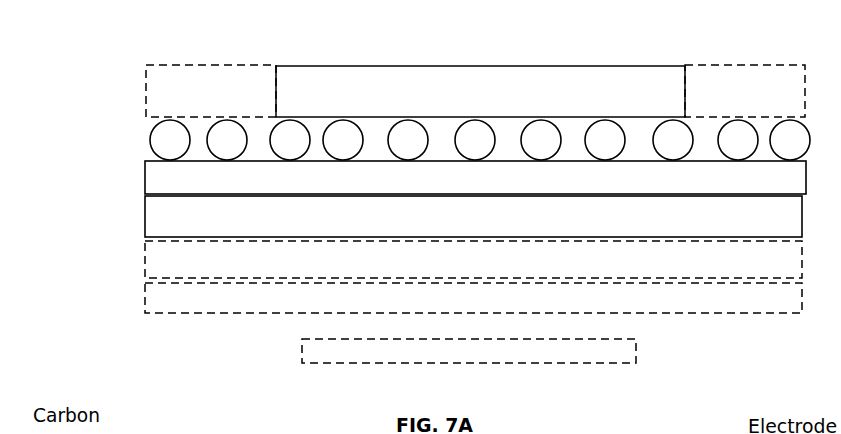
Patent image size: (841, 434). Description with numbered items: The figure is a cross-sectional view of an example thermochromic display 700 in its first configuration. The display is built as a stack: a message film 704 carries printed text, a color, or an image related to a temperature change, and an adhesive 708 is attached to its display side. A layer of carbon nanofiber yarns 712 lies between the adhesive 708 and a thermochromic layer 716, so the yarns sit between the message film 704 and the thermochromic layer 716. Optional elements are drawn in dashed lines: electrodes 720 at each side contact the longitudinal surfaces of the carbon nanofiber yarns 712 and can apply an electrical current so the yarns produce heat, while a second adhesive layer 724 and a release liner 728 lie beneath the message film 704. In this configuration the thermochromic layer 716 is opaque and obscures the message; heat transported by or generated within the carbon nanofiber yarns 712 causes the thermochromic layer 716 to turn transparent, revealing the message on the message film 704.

The thermochromic display 700 is at (415, 202).
The message film 704 is at (553, 225).
The adhesive 708 is at (535, 189).
The carbon nanofiber yarns 712 is at (128, 121).
The thermochromic layer 716 is at (600, 103).
The electrodes 720 is at (762, 116).
The second adhesive layer 724 is at (562, 270).
The release liner 728 is at (553, 308).